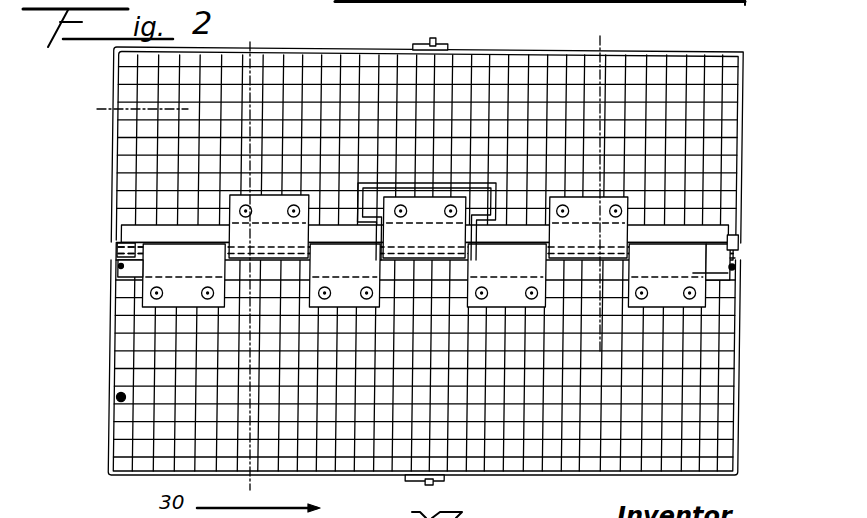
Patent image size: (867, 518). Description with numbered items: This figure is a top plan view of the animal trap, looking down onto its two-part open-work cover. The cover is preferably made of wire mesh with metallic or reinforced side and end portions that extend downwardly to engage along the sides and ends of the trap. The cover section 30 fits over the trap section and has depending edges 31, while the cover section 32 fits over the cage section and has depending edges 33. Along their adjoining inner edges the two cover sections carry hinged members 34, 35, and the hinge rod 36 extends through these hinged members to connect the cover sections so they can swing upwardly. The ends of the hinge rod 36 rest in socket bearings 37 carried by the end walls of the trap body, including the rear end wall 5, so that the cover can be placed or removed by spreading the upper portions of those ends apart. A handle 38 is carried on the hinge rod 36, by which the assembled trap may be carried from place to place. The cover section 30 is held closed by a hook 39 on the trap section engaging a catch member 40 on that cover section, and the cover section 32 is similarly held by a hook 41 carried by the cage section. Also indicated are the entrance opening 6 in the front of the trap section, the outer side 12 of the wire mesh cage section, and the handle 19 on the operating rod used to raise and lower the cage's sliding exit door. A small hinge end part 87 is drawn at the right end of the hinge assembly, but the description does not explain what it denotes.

The rear end wall 5 is at (228, 40).
The entrance opening 6 is at (623, 42).
The outer side 12 is at (97, 92).
The handle 19 is at (117, 397).
The cover section 30 is at (724, 146).
The depending edges 31 is at (713, 53).
The cover section 32 is at (700, 327).
The depending edges 33 is at (709, 477).
The hinged member 34 is at (610, 235).
The hinged member 35 is at (694, 273).
The hinge rod 36 is at (735, 258).
The socket bearing 37 is at (120, 248).
The handle 38 is at (426, 221).
The hook 39 is at (445, 47).
The catch member 40 is at (438, 44).
The hook 41 is at (438, 482).
The hinge end block 87 is at (718, 243).